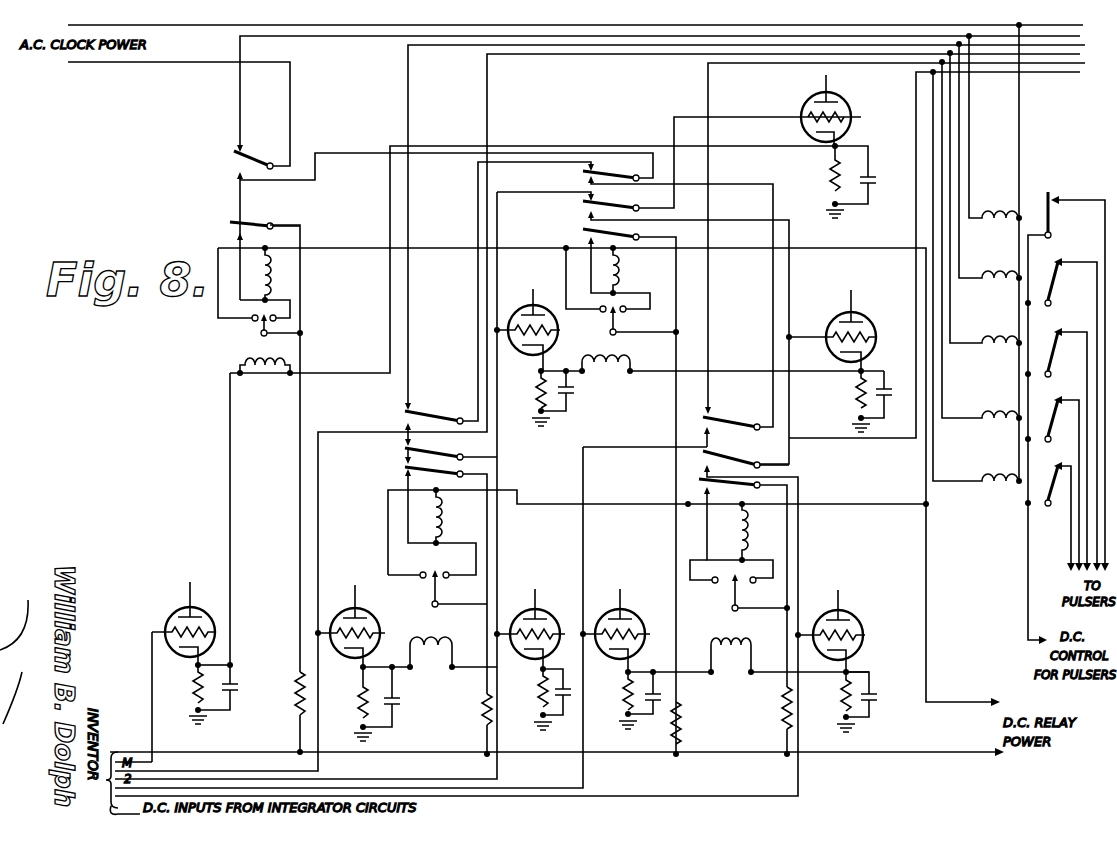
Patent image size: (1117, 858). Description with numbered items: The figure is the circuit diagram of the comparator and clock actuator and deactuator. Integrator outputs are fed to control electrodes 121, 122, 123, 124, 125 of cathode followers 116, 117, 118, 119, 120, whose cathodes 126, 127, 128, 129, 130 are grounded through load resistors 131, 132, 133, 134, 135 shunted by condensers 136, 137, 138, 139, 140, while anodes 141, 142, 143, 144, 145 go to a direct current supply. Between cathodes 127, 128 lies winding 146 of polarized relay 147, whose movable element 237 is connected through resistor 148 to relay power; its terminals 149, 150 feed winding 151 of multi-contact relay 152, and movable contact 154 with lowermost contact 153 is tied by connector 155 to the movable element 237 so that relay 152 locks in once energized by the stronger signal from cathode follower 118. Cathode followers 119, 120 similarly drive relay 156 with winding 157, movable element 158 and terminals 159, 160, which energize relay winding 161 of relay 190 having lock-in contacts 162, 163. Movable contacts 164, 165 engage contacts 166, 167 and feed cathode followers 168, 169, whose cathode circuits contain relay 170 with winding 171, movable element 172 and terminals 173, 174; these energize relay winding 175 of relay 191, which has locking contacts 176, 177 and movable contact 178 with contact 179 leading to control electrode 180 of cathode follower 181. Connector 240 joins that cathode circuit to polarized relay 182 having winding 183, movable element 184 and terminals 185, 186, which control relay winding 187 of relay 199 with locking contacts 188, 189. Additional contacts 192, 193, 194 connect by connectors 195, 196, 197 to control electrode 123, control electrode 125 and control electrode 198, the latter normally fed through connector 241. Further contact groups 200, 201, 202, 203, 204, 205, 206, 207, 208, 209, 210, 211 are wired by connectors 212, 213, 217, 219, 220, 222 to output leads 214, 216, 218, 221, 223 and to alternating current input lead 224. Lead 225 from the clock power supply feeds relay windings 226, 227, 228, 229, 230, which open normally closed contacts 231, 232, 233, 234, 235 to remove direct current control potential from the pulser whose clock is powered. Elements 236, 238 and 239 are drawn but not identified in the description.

The cathode follower 116 is at (176, 598).
The cathode follower 117 is at (372, 616).
The cathode follower 118 is at (546, 616).
The cathode follower 119 is at (634, 618).
The cathode follower 120 is at (858, 618).
The control electrode 121 is at (176, 626).
The control electrode 122 is at (342, 616).
The control electrode 123 is at (548, 634).
The control electrode 124 is at (636, 634).
The control electrode 125 is at (860, 634).
The cathode 126 is at (194, 654).
The cathode 127 is at (360, 656).
The cathode 128 is at (546, 656).
The cathode 129 is at (618, 656).
The cathode 130 is at (858, 656).
The load resistor 131 is at (196, 700).
The load resistor 132 is at (360, 704).
The load resistor 133 is at (540, 698).
The load resistor 134 is at (626, 698).
The load resistor 135 is at (844, 700).
The condenser 136 is at (234, 678).
The condenser 137 is at (400, 706).
The condenser 138 is at (570, 706).
The condenser 139 is at (662, 702).
The condenser 140 is at (876, 692).
The anode 141 is at (190, 588).
The anode 142 is at (368, 574).
The anode 143 is at (534, 592).
The anode 144 is at (620, 594).
The anode 145 is at (838, 594).
The winding 146 is at (432, 630).
The polarized relay 147 is at (434, 607).
The resistor 148 is at (482, 716).
The terminal 149 is at (424, 572).
The terminal 150 is at (446, 572).
The winding 151 is at (442, 522).
The multi-contact relay 152 is at (495, 465).
The lowermost contact 153 is at (404, 475).
The movable contact 154 is at (404, 468).
The connector 155 is at (608, 503).
The relay 156 is at (712, 609).
The winding 157 is at (736, 644).
The movable element 158 is at (731, 610).
The terminal 159 is at (716, 584).
The terminal 160 is at (752, 584).
The relay winding 161 is at (748, 536).
The lock-in contact 162 is at (706, 494).
The lock-in contact 163 is at (697, 482).
The movable contact 164 is at (432, 458).
The movable contact 165 is at (754, 464).
The contact 166 is at (410, 448).
The contact 167 is at (710, 455).
The cathode follower 168 is at (515, 318).
The cathode follower 169 is at (862, 318).
The relay 170 is at (600, 335).
The winding 171 is at (610, 366).
The movable element 172 is at (618, 312).
The terminal 173 is at (601, 307).
The terminal 174 is at (650, 298).
The relay winding 175 is at (618, 270).
The locking contact 176 is at (620, 235).
The locking contact 177 is at (588, 238).
The movable contact 178 is at (592, 207).
The contact 179 is at (585, 200).
The control electrode 180 is at (852, 118).
The cathode follower 181 is at (846, 104).
The polarized relay 182 is at (254, 337).
The winding 183 is at (266, 370).
The movable element 184 is at (270, 332).
The terminal 185 is at (252, 320).
The terminal 186 is at (276, 316).
The relay winding 187 is at (270, 276).
The locking contact 188 is at (237, 236).
The locking contact 189 is at (234, 221).
The relay 190 is at (760, 470).
The relay 191 is at (662, 210).
The contact 192 is at (404, 446).
The contact 193 is at (706, 468).
The contact 194 is at (588, 218).
The connector 195 is at (498, 556).
The connector 196 is at (802, 554).
The connector 197 is at (790, 292).
The control electrode 198 is at (874, 338).
The relay 199 is at (290, 207).
The contact 200 is at (405, 417).
The contact 201 is at (413, 406).
The contact 202 is at (434, 430).
The contact 203 is at (706, 431).
The contact 204 is at (734, 424).
The contact 205 is at (710, 410).
The contact 206 is at (600, 182).
The contact 207 is at (594, 166).
The contact 208 is at (588, 182).
The contact 209 is at (237, 174).
The contact 210 is at (237, 148).
The contact 211 is at (256, 160).
The connector 212 is at (476, 306).
The connector 213 is at (489, 278).
The output terminal lead 214 is at (587, 48).
The output lead 216 is at (443, 47).
The connector 217 is at (914, 224).
The output lead 218 is at (1043, 74).
The connector 219 is at (772, 316).
The connector 220 is at (710, 302).
The output lead 221 is at (748, 62).
The connector 222 is at (345, 153).
The output lead 223 is at (337, 38).
The alternating current input lead 224 is at (146, 66).
The lead 225 is at (213, 26).
The relay winding 226 is at (1000, 214).
The relay winding 227 is at (1000, 273).
The relay winding 228 is at (1000, 339).
The relay winding 229 is at (1000, 413).
The relay winding 230 is at (1000, 477).
The normally closed contacts 231 is at (1060, 196).
The normally closed contacts 232 is at (1066, 258).
The normally closed contacts 233 is at (1062, 328).
The normally closed contacts 234 is at (1062, 396).
The normally closed contacts 235 is at (1062, 462).
The cathode 236 is at (528, 348).
The movable element 237 is at (440, 600).
The conductor 238 is at (298, 530).
The resistor 239 is at (297, 700).
The connector 240 is at (443, 146).
The connector 241 is at (586, 548).